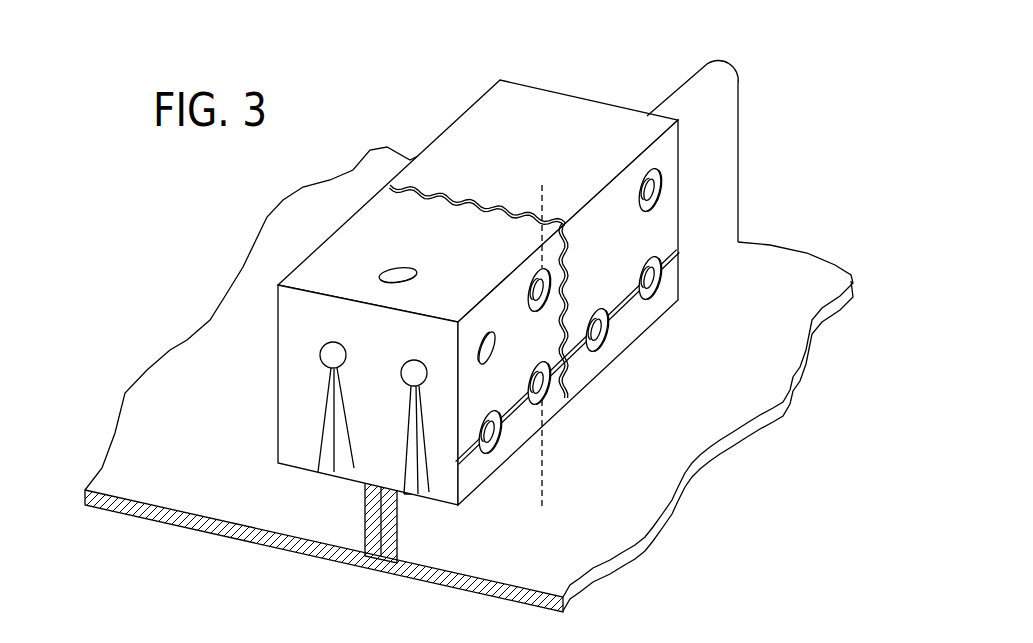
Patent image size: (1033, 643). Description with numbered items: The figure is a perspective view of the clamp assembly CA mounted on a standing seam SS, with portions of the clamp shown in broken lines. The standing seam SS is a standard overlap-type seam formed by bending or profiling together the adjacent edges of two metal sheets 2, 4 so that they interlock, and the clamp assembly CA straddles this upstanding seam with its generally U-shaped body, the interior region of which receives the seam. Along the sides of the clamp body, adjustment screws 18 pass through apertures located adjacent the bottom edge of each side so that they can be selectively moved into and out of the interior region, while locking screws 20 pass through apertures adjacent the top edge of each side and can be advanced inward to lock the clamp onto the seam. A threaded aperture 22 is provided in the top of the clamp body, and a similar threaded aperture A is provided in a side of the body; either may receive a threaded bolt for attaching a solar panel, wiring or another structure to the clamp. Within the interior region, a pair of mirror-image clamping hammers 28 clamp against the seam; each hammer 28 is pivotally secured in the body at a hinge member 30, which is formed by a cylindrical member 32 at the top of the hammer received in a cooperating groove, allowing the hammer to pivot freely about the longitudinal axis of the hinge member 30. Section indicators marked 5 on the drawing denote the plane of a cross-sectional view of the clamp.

The clamp assembly CA is at (580, 97).
The standing seam SS is at (741, 172).
The metal sheet 2 is at (808, 265).
The metal sheet 4 is at (157, 387).
The section line 5 is at (535, 203).
The threaded aperture 22 is at (380, 270).
The hinge member 30 is at (318, 351).
The cylindrical member 32 is at (413, 370).
The clamping hammers 28 is at (343, 472).
The adjustment screws 18 is at (653, 293).
The locking screws 20 is at (660, 185).
The threaded aperture A is at (490, 357).